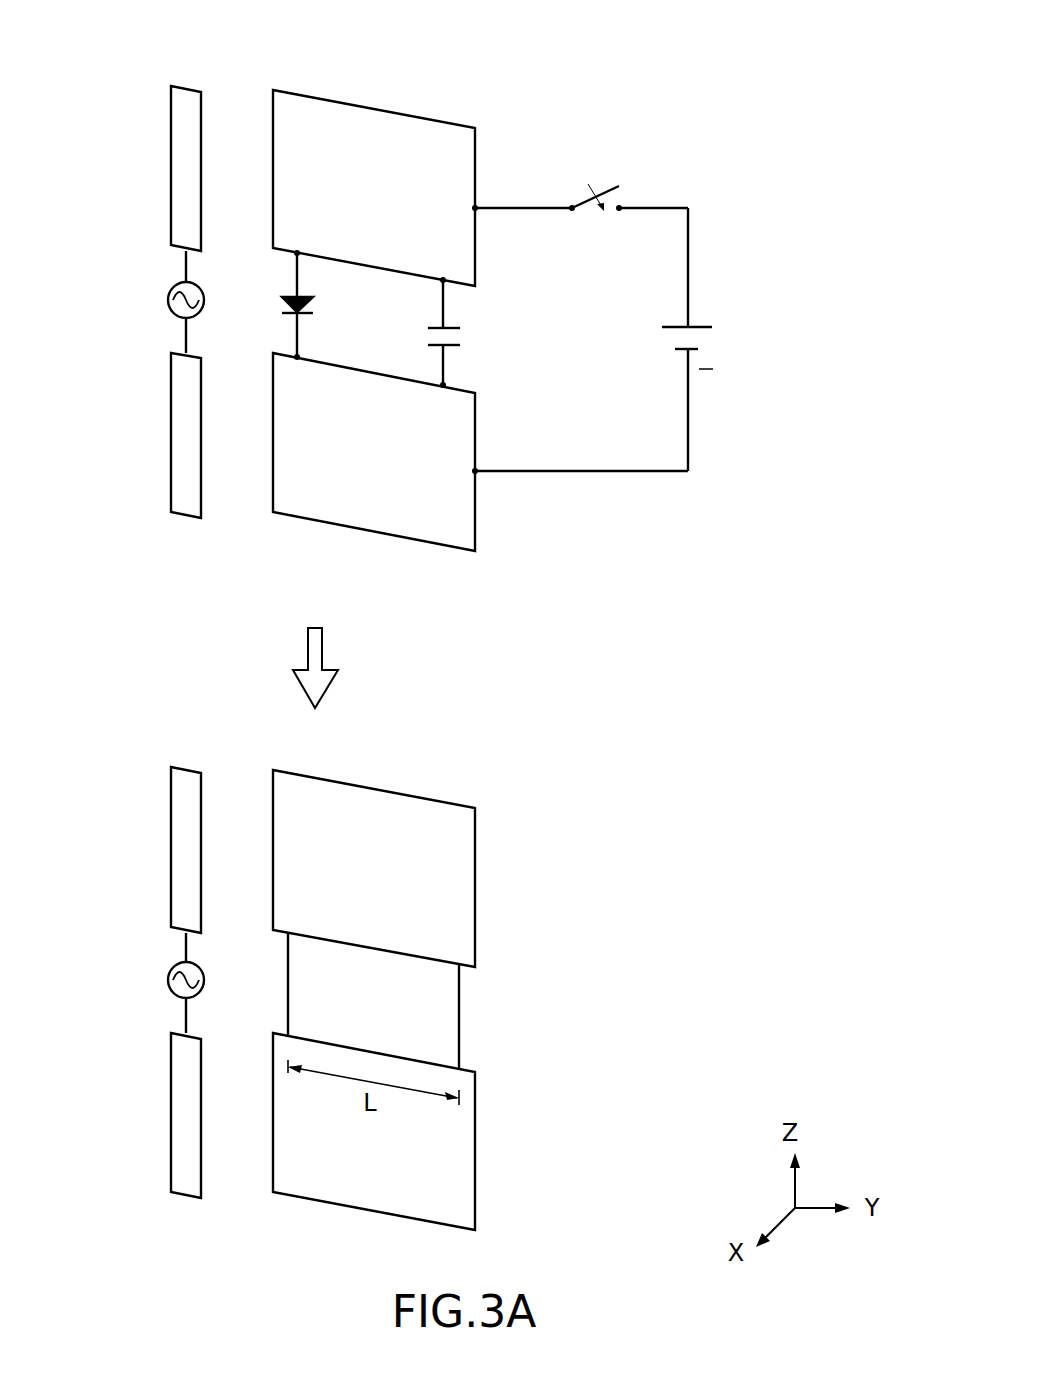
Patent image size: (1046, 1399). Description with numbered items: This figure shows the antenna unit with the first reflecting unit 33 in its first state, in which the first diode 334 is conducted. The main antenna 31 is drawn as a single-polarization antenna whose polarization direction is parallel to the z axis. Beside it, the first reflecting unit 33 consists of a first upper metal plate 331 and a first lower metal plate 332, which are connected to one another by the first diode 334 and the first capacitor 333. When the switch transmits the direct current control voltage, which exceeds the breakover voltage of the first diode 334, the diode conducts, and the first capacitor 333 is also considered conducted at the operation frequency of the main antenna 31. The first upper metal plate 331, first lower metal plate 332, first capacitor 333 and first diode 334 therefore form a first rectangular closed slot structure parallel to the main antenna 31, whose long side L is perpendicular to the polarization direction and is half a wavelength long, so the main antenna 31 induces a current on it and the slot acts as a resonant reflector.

The main antenna 31 is at (142, 173).
The first reflecting unit 33 is at (342, 70).
The first upper metal plate 331 is at (423, 115).
The first lower metal plate 332 is at (375, 532).
The first capacitor 333 is at (425, 335).
The first diode 334 is at (313, 311).